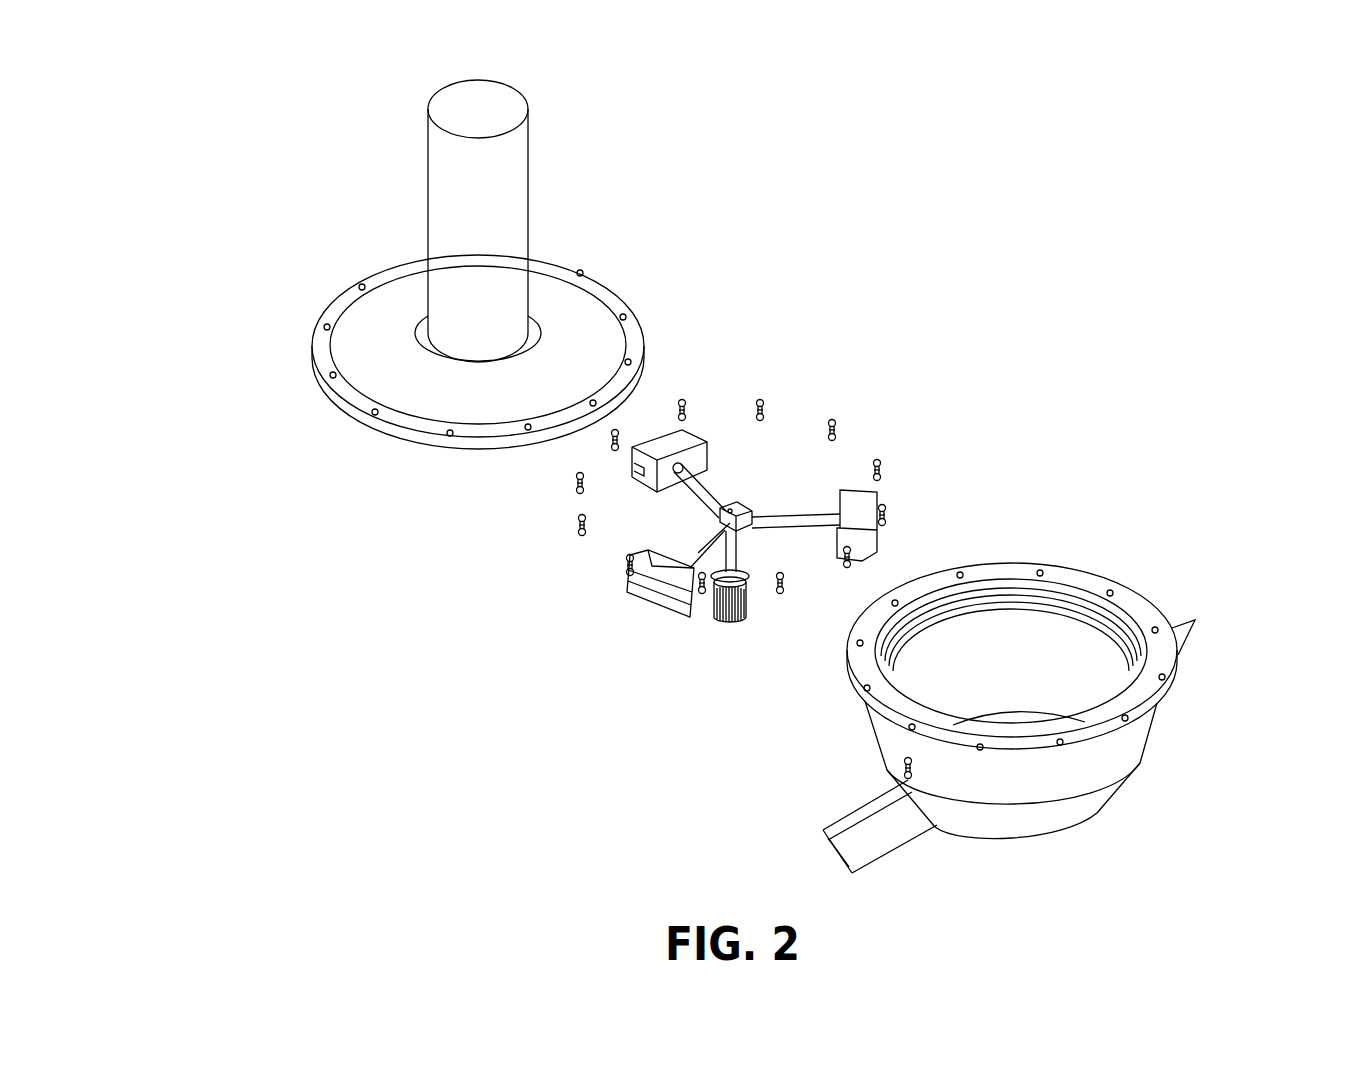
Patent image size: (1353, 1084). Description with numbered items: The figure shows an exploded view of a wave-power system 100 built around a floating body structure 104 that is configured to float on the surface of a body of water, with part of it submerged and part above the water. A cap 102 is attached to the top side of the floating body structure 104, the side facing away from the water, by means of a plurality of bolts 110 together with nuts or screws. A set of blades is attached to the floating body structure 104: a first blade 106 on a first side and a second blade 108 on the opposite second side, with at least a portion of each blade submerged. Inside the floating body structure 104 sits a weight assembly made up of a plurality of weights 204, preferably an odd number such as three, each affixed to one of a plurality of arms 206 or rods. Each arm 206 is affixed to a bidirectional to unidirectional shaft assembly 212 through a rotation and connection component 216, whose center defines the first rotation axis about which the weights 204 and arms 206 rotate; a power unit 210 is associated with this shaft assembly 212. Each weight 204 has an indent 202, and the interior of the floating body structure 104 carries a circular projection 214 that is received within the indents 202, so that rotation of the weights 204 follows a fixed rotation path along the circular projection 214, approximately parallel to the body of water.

The wave-power system 100 is at (243, 80).
The cap 102 is at (510, 173).
The floating body structure 104 is at (1033, 777).
The first blade 106 is at (858, 852).
The second blade 108 is at (1195, 620).
The bolts 110 is at (576, 520).
The indent 202 is at (856, 546).
The weights 204 is at (692, 443).
The arms 206 is at (792, 523).
The power unit 210 is at (714, 624).
The bidirectional to unidirectional shaft assembly 212 is at (716, 562).
The circular projection 214 is at (1088, 620).
The rotation and connection component 216 is at (736, 528).